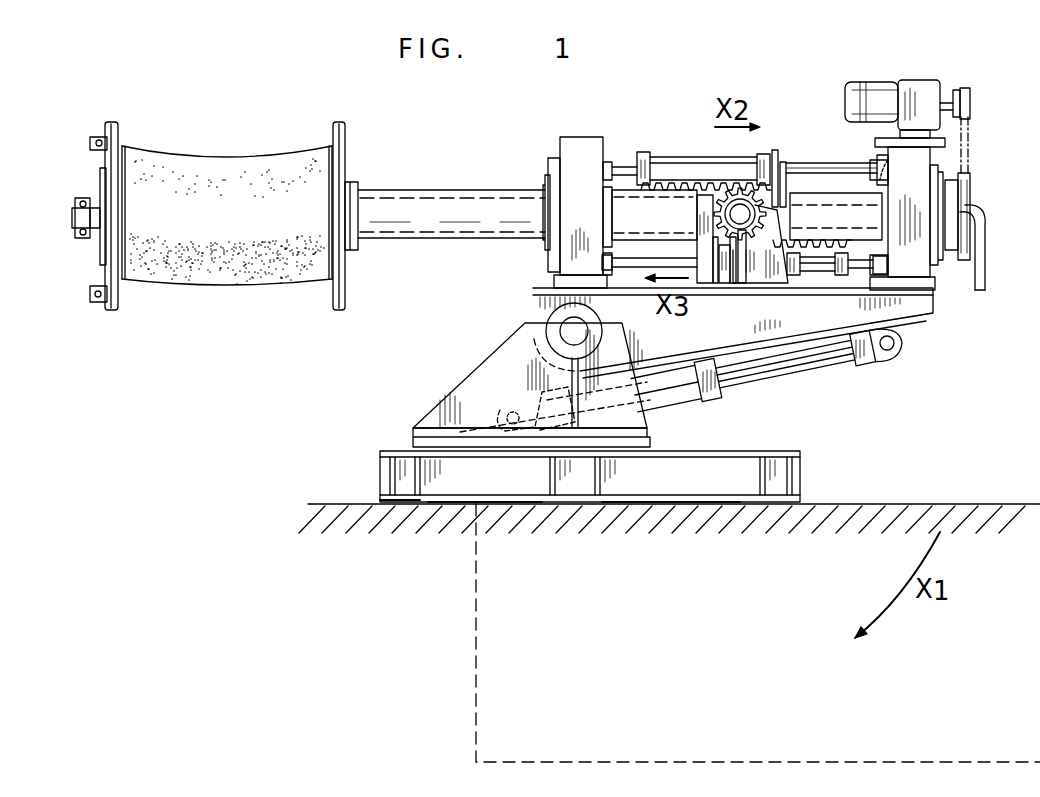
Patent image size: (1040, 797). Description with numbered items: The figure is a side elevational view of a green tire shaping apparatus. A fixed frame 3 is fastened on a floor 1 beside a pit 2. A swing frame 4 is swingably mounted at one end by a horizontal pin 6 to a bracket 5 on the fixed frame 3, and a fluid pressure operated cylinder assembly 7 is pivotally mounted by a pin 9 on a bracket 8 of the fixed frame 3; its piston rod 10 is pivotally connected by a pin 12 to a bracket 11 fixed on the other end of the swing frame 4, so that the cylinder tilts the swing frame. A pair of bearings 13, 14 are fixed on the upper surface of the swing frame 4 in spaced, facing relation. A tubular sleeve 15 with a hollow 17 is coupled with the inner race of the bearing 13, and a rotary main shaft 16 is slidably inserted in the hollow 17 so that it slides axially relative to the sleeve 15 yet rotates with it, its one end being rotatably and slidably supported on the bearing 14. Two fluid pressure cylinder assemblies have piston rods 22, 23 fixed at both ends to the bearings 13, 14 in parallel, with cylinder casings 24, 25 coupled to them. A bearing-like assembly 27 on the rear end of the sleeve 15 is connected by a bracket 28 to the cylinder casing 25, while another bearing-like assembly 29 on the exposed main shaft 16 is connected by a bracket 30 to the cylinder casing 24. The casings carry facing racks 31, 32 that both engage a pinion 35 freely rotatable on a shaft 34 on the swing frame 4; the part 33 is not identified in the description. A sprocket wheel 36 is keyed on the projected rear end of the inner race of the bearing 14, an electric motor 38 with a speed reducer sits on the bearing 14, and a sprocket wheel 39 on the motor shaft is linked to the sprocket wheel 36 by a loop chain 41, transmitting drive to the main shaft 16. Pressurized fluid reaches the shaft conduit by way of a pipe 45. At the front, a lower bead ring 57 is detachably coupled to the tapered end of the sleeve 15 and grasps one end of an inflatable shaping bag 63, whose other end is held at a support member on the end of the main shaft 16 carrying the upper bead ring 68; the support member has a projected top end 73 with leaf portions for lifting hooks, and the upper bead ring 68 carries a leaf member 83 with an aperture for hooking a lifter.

The floor 1 is at (362, 503).
The pit 2 is at (480, 532).
The fixed frame 3 is at (390, 456).
The swing frame 4 is at (540, 290).
The bracket 5 is at (492, 358).
The horizontal pin 6 is at (566, 326).
The fluid pressure operated cylinder assembly 7 is at (684, 398).
The bracket 8 is at (488, 424).
The pin 9 is at (512, 412).
The piston rod 10 is at (793, 363).
The bracket 11 is at (926, 322).
The pin 12 is at (887, 351).
The bearing 13 is at (571, 142).
The bearing 14 is at (890, 160).
The tubular sleeve 15 is at (445, 190).
The rotary main shaft 16 is at (503, 210).
The hollow 17 is at (412, 198).
The piston rod 22 is at (822, 167).
The piston rod 23 is at (637, 262).
The cylinder casing 24 is at (669, 163).
The cylinder casing 25 is at (815, 266).
The bearing-like assembly 27 is at (712, 283).
The bracket 28 is at (692, 252).
The bearing-like assembly 29 is at (788, 166).
The bracket 30 is at (772, 160).
The rack 31 is at (645, 190).
The rack 32 is at (850, 240).
The support bracket 33 is at (742, 262).
The shaft 34 is at (784, 208).
The pinion 35 is at (738, 212).
The sprocket wheel 36 is at (963, 258).
The electric motor 38 is at (916, 84).
The sprocket wheel 39 is at (968, 98).
The loop chain 41 is at (965, 150).
The pipe 45 is at (985, 246).
The lower bead ring 57 is at (345, 130).
The inflatable shaping bag 63 is at (227, 160).
The upper bead ring 68 is at (112, 130).
The projected top end 73 is at (72, 217).
The leaf member 83 is at (90, 294).